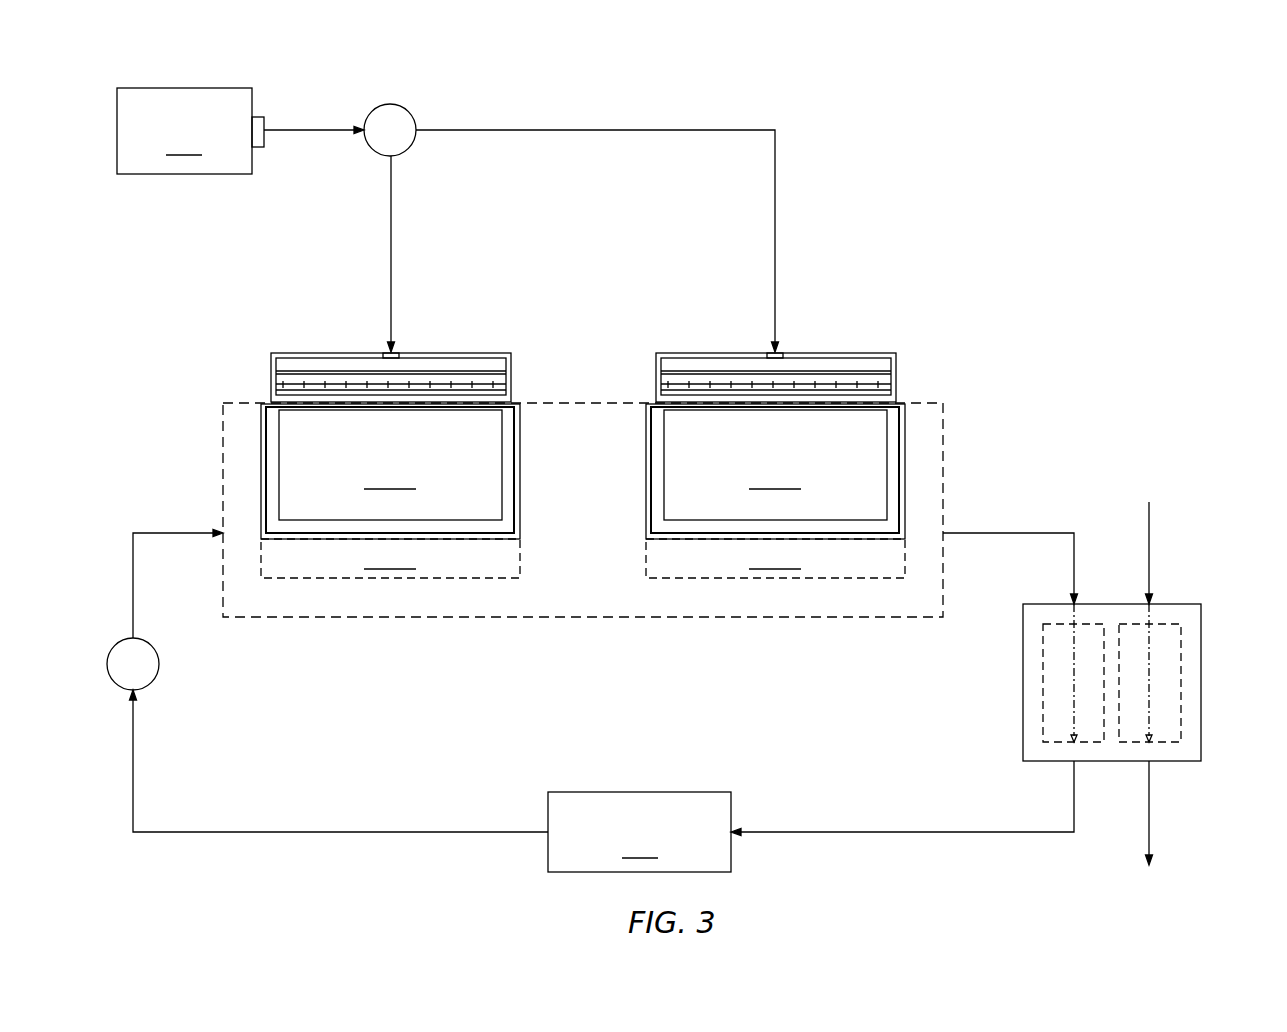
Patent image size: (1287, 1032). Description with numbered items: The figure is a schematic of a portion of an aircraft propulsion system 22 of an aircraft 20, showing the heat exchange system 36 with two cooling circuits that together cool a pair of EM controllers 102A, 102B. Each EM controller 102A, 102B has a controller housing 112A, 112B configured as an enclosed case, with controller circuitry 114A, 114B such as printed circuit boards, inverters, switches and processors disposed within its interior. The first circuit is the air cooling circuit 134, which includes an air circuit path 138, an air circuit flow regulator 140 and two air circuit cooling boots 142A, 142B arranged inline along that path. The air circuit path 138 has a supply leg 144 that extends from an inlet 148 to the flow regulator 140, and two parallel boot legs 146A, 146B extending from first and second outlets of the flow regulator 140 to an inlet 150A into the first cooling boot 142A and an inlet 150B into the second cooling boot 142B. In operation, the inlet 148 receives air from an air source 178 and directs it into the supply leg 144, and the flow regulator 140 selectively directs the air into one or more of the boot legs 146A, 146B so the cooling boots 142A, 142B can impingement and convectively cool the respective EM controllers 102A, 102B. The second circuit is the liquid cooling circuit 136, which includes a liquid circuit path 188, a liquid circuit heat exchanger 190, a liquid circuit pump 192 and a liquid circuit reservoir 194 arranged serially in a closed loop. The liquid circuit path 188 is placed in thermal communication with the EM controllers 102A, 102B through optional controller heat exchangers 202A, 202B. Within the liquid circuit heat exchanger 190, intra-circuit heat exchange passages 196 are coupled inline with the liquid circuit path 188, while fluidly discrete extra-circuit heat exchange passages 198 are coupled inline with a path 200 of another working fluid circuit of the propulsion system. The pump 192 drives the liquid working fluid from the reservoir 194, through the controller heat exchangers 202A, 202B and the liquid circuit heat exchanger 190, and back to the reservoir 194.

The air source 178 is at (184, 131).
The air circuit inlet 148 is at (261, 117).
The supply leg 144 is at (314, 137).
The air circuit flow regulator 140 is at (392, 104).
The air circuit path 138 is at (613, 118).
The first boot leg 146A is at (391, 244).
The second boot leg 146B is at (775, 244).
The first air circuit cooling boot 142A is at (483, 347).
The second air circuit cooling boot 142B is at (869, 347).
The inlet into the first cooling boot 150A is at (398, 350).
The inlet into the second cooling boot 150B is at (783, 350).
The liquid cooling circuit 136 is at (125, 495).
The first EM controller 102A is at (330, 489).
The second EM controller 102B is at (836, 489).
The first controller housing 112A is at (262, 462).
The second controller housing 112B is at (906, 462).
The first controller circuitry 114A is at (390, 465).
The second controller circuitry 114B is at (775, 465).
The first controller heat exchanger 202A is at (390, 558).
The second controller heat exchanger 202B is at (775, 558).
The liquid circuit pump 192 is at (159, 664).
The liquid circuit path 188 is at (136, 848).
The liquid circuit reservoir 194 is at (639, 832).
The liquid circuit heat exchanger 190 is at (1018, 736).
The intra-circuit heat exchange passage 196 is at (1104, 698).
The extra-circuit heat exchange passage 198 is at (1119, 696).
The path of another working fluid circuit 200 is at (1162, 530).
The air cooling circuit 134 is at (833, 115).
The heat exchange system 36 is at (1012, 95).
The aircraft 20 is at (1153, 53).
The aircraft propulsion system 22 is at (1115, 87).